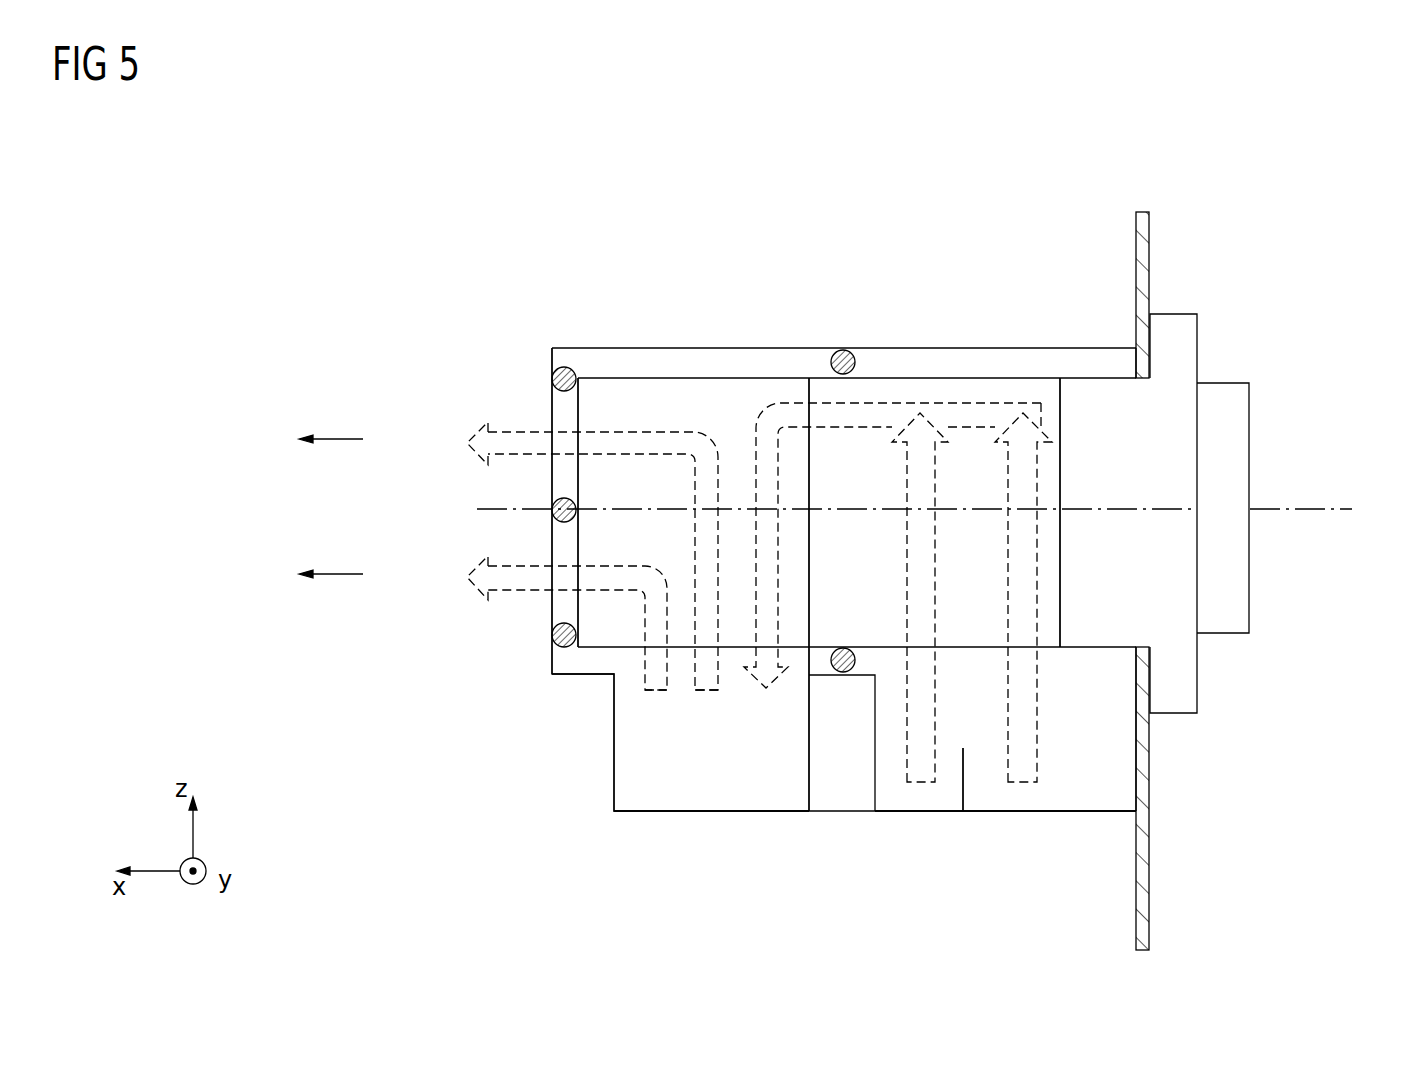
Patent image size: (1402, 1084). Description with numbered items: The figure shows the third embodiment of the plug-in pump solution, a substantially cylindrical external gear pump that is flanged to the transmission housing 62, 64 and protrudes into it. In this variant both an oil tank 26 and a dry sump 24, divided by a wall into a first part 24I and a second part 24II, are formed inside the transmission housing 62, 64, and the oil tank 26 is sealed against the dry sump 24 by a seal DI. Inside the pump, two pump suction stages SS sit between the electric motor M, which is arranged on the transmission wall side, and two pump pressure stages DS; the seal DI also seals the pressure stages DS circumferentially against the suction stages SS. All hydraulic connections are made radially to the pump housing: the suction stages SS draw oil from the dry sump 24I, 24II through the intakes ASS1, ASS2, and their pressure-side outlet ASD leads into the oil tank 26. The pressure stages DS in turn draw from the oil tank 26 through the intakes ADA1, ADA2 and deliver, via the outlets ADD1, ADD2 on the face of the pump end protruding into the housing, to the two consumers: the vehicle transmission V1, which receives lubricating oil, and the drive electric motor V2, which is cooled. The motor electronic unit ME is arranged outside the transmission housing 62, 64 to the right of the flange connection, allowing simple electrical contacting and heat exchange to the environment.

The dry sump 24 is at (946, 878).
The dry sump first part 24I is at (900, 812).
The dry sump second part 24II is at (1069, 812).
The oil tank 26 is at (699, 775).
The transmission housing 62 is at (614, 752).
The transmission housing 64 is at (1140, 868).
The electric motor M is at (1173, 348).
The motor electronic unit ME is at (1228, 443).
The seal DI is at (568, 376).
The pump pressure stages DS is at (764, 390).
The pump suction stages SS is at (985, 390).
The vehicle transmission V1 is at (312, 439).
The electric motor for driving the electric vehicle V2 is at (312, 574).
The outlet of the pump pressure stages ADD1 is at (553, 556).
The outlet of the pump pressure stages ADD2 is at (527, 623).
The intake of the pump pressure stages ADA1 is at (732, 712).
The intake of the pump pressure stages ADA2 is at (656, 712).
The pressure-side outlet of the pump suction stages ASD is at (892, 545).
The intake of the pump suction stages ASS1 is at (947, 597).
The intake of the pump suction stages ASS2 is at (1050, 597).